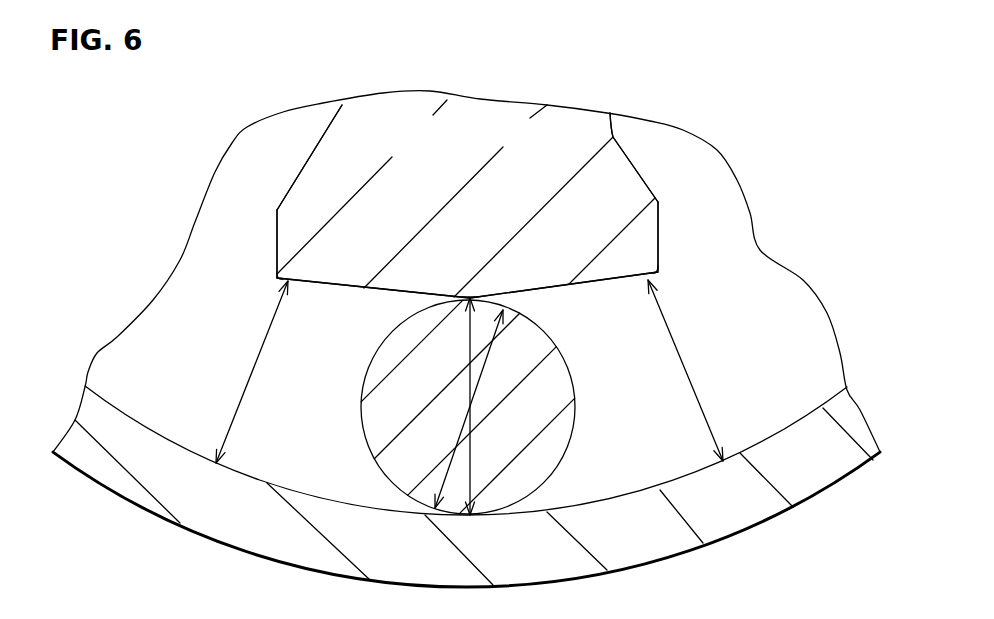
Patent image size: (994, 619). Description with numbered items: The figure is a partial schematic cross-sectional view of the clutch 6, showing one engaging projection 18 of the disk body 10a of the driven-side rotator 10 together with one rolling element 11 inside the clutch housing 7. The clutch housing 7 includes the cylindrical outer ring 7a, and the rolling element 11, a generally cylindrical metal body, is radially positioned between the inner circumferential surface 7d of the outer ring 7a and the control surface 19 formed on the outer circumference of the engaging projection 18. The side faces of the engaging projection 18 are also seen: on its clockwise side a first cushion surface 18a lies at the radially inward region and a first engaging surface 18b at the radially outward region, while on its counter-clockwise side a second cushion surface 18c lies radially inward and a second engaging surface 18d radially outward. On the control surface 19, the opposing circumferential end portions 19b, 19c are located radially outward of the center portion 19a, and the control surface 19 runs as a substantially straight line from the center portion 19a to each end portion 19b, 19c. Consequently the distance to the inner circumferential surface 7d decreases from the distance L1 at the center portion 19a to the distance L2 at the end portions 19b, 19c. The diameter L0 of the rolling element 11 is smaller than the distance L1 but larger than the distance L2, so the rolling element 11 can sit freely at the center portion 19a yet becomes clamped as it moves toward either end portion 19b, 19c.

The clutch 6 is at (817, 260).
The clutch housing 7 is at (466, 490).
The cylindrical outer ring 7a is at (648, 556).
The inner circumferential surface of the outer ring 7d is at (580, 505).
The driven-side rotator 10 is at (473, 210).
The disk body 10a is at (395, 150).
The rolling element 11 is at (362, 418).
The engaging projection 18 is at (470, 173).
The first cushion surface 18a is at (277, 233).
The first engaging surface 18b is at (323, 135).
The second cushion surface 18c is at (627, 157).
The second engaging surface 18d is at (660, 230).
The control surface 19 is at (473, 298).
The center portion 19a is at (480, 300).
The circumferential end portion 19b is at (657, 273).
The circumferential end portion 19c is at (277, 278).
The diameter of the rolling element L0 is at (480, 382).
The distance between center portion and inner circumferential surface L1 is at (470, 385).
The distance between end portion and inner circumferential surface L2 is at (247, 383).